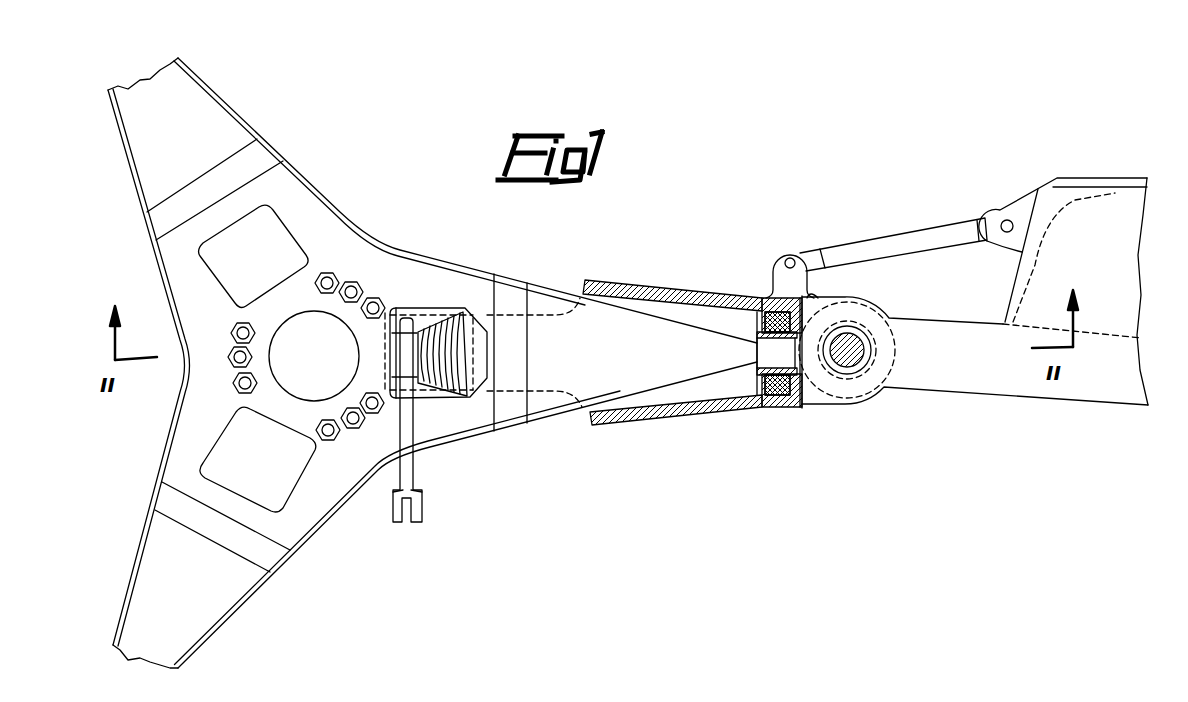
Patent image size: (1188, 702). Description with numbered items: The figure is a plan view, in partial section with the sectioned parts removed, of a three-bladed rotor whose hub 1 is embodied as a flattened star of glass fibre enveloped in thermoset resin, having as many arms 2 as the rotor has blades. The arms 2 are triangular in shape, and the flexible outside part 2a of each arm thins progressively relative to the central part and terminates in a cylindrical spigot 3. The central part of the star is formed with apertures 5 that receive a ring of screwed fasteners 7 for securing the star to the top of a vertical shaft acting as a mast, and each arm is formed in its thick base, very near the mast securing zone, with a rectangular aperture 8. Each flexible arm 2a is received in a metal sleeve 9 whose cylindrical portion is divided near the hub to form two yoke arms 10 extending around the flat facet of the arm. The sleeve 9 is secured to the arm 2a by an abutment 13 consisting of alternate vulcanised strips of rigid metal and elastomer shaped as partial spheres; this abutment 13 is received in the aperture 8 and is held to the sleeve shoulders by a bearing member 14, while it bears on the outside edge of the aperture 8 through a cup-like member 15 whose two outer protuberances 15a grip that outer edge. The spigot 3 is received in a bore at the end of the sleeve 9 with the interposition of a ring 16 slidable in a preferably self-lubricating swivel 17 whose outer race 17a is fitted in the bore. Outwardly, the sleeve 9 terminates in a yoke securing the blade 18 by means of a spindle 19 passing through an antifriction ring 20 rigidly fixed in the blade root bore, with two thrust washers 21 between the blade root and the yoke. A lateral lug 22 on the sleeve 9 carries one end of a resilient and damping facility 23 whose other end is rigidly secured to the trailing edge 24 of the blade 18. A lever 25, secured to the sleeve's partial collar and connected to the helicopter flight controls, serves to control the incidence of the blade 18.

The hub 1 is at (362, 222).
The arms 2 is at (220, 89).
The flexible outside part of arm 2a is at (180, 85).
The cylindrical spigot 3 is at (806, 382).
The apertures 5 is at (378, 304).
The screwed fasteners 7 is at (231, 333).
The rectangular aperture 8 is at (425, 308).
The metal sleeve 9 is at (655, 285).
The yoke arms 10 is at (503, 393).
The abutment 13 is at (445, 398).
The bearing member 14 is at (413, 345).
The cup-like member 15 is at (458, 400).
The outer protuberances 15a is at (480, 318).
The ring 16 is at (757, 370).
The swivel 17 is at (789, 400).
The outer race 17a is at (808, 305).
The blade 18 is at (1005, 398).
The spindle 19 is at (872, 357).
The antifriction ring 20 is at (848, 370).
The thrust washers 21 is at (896, 346).
The lateral lug 22 is at (787, 272).
The resilient and damping facility 23 is at (875, 240).
The trailing edge 24 is at (1012, 215).
The lever 25 is at (420, 493).